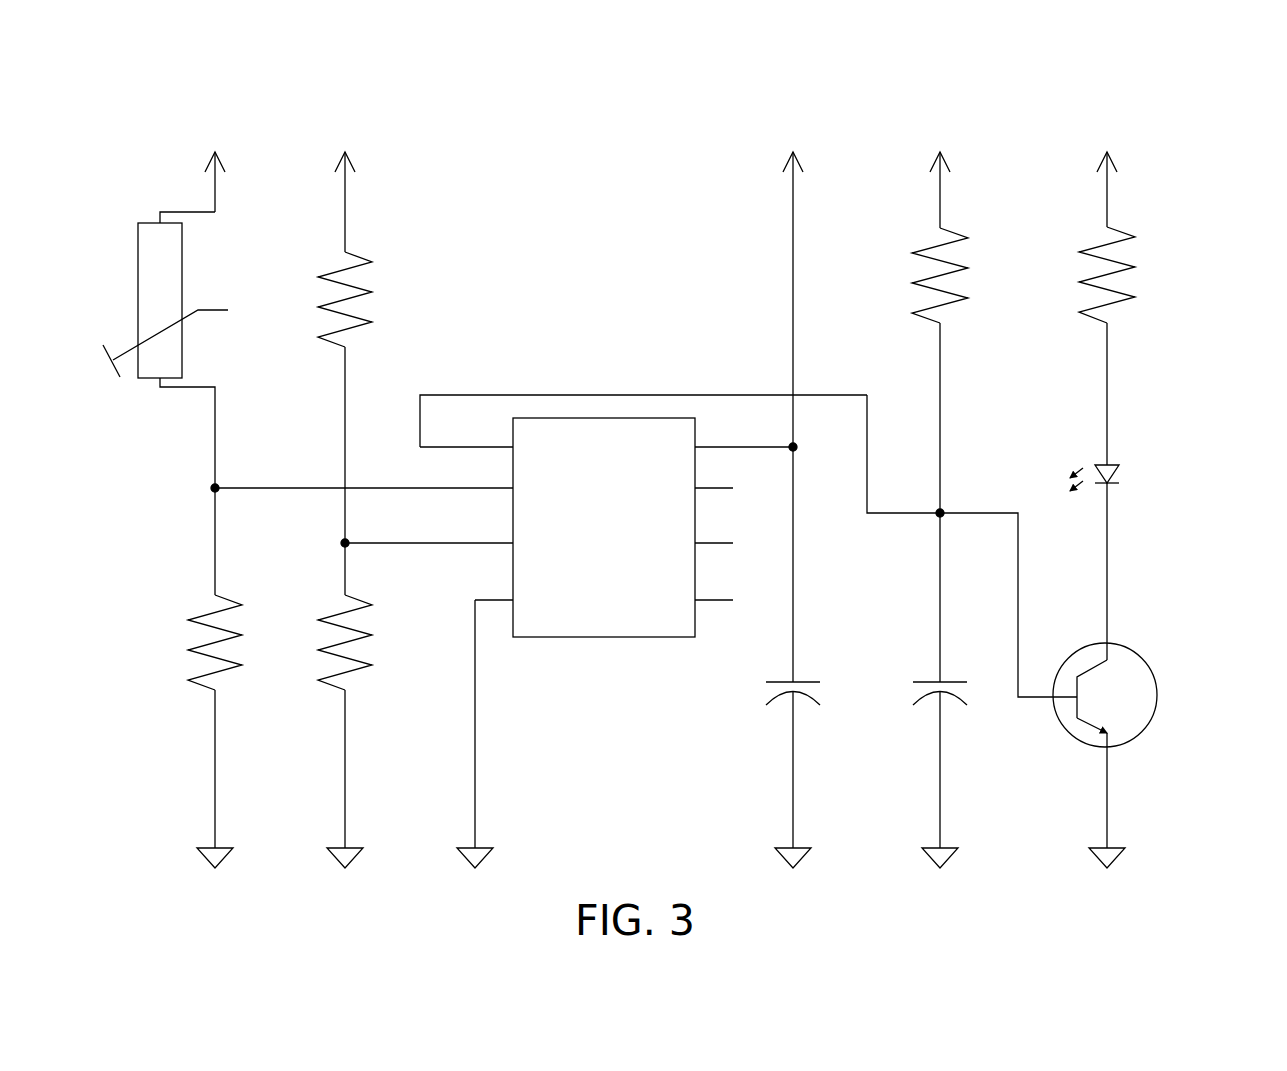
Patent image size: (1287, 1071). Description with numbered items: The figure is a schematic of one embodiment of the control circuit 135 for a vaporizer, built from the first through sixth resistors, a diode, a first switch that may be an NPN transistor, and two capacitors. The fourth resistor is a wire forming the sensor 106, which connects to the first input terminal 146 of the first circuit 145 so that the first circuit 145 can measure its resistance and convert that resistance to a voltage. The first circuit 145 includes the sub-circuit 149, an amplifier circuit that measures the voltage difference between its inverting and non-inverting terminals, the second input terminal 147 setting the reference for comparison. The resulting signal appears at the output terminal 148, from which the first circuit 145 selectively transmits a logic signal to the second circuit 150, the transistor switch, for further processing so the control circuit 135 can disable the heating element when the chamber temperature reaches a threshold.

The sensor 106 is at (123, 412).
The control circuit 135 is at (1000, 87).
The first circuit 145 is at (403, 100).
The first input terminal 146 is at (218, 485).
The second input terminal 147 is at (341, 540).
The output terminal 148 is at (945, 509).
The sub-circuit 149 is at (598, 637).
The second circuit 150 is at (1177, 550).